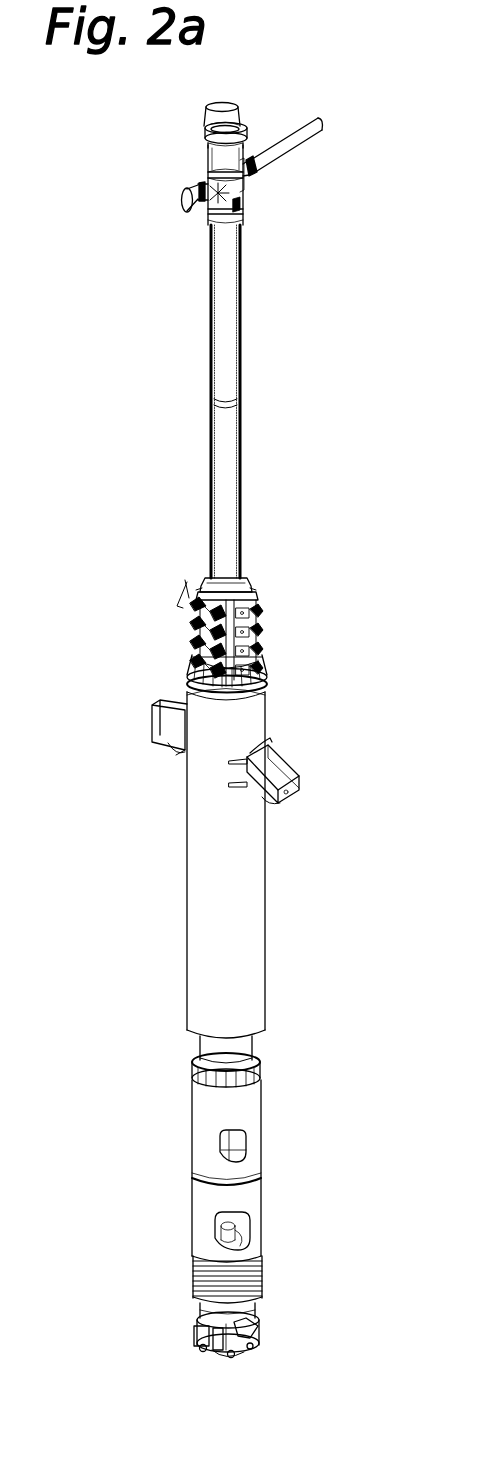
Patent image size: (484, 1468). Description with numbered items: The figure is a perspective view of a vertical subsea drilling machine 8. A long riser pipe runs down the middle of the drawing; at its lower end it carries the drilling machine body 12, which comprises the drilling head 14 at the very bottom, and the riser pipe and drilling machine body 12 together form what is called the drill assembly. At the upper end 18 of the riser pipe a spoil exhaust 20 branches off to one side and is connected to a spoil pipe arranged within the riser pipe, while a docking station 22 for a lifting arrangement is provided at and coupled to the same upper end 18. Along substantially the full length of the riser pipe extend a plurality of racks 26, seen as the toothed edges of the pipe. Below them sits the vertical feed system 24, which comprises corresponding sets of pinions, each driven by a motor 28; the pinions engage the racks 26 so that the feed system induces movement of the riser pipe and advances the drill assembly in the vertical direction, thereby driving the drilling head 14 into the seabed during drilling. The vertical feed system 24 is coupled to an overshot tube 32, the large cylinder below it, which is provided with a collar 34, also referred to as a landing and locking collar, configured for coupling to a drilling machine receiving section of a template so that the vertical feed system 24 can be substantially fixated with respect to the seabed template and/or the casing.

The subsea drilling machine 8 is at (124, 209).
The drilling machine body 12 is at (297, 1358).
The drilling head 14 is at (196, 1345).
The upper end 18 is at (243, 210).
The spoil exhaust 20 is at (322, 118).
The docking station 22 is at (230, 103).
The vertical feed system 24 is at (152, 598).
The racks 26 is at (212, 302).
The motor 28 is at (262, 641).
The overshot tube 32 is at (248, 893).
The collar 34 is at (282, 766).